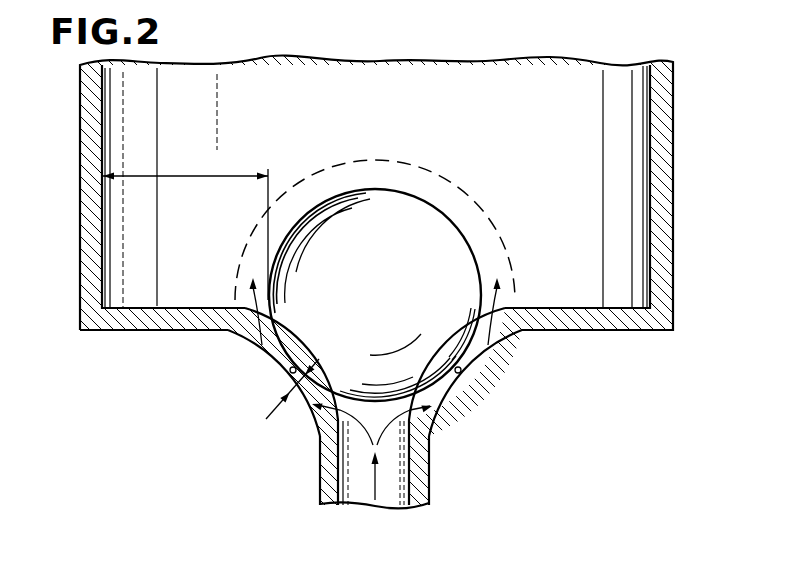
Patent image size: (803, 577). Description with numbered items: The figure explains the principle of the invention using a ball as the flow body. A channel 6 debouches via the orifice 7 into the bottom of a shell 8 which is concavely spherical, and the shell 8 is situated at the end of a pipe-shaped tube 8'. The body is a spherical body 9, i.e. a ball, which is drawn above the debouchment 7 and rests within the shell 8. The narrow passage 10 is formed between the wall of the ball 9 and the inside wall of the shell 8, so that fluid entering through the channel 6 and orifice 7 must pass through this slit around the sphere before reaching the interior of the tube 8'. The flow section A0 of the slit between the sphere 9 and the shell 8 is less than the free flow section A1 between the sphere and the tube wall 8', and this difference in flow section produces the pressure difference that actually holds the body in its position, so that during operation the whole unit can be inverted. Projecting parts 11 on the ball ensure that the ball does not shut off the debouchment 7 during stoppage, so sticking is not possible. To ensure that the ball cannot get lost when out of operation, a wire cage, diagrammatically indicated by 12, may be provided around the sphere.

The channel 6 is at (430, 470).
The orifice 7 is at (352, 480).
The shell 8 is at (395, 373).
The pipe-shaped tube 8' is at (392, 192).
The spherical body 9 is at (452, 238).
The narrow passage 10 is at (483, 353).
The projecting parts 11 is at (290, 370).
The wire cage 12 is at (447, 175).
The flow section of the slit A0 is at (296, 385).
The free flow section A1 is at (178, 176).